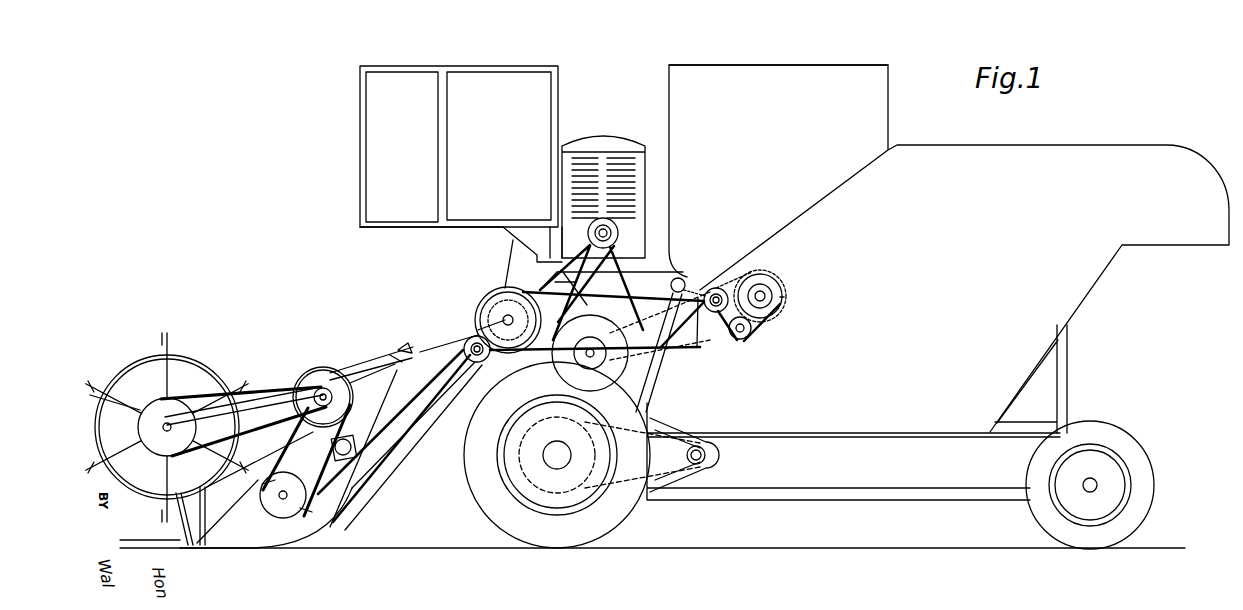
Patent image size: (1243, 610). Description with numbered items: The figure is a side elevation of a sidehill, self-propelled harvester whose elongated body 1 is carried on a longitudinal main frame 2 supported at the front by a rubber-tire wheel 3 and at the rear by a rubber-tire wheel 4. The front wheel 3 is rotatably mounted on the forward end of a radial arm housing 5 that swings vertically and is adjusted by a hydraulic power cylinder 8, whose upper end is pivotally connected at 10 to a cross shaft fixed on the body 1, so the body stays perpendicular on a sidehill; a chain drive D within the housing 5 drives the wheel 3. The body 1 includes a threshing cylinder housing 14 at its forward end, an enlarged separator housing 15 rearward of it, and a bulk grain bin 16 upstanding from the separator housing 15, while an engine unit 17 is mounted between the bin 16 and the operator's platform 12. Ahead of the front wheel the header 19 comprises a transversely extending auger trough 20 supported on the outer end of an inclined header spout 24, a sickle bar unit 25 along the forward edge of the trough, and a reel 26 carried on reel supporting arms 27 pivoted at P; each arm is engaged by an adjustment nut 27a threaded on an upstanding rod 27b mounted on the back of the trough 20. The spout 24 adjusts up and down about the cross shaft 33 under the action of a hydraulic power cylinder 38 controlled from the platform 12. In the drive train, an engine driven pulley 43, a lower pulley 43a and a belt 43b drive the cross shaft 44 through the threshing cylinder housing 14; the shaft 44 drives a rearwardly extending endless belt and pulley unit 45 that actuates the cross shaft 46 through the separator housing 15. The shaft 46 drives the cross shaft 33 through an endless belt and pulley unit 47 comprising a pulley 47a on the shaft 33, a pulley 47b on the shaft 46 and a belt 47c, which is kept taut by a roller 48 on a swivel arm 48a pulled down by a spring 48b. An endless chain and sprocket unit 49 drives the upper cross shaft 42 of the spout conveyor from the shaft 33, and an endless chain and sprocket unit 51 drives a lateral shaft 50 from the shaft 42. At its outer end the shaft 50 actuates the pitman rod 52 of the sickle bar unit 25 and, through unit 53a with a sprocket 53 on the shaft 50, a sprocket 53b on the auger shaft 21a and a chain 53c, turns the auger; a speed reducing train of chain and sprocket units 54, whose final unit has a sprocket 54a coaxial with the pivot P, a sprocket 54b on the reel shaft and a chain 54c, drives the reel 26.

The body 1 is at (1006, 140).
The main frame 2 is at (988, 479).
The front wheel 3 is at (538, 532).
The rear wheel 4 is at (1093, 428).
The radial arm housing 5 is at (700, 470).
The hydraulic power cylinder 8 is at (648, 380).
The pivotal connection 10 is at (684, 278).
The operator's platform 12 is at (396, 215).
The threshing cylinder housing 14 is at (575, 300).
The separator housing 15 is at (1050, 285).
The bulk grain bin 16 is at (862, 113).
The engine unit 17 is at (603, 132).
The header 19 is at (225, 375).
The auger trough 20 is at (250, 552).
The auger shaft 21a is at (286, 500).
The header spout 24 is at (362, 378).
The sickle bar unit 25 is at (176, 546).
The reel 26 is at (196, 358).
The reel supporting arm 27 is at (252, 388).
The adjustment nut 27a is at (393, 350).
The upstanding rod 27b is at (372, 376).
The cross shaft 33 is at (505, 318).
The hydraulic power cylinder 38 is at (428, 397).
The upper cross shaft 42 is at (470, 357).
The engine driven pulley 43 is at (618, 228).
The lower pulley 43a is at (555, 355).
The belt 43b is at (625, 252).
The cross shaft 44 is at (588, 360).
The endless belt and pulley unit 45 is at (722, 288).
The cross shaft 46 is at (762, 296).
The endless belt and pulley unit 47 is at (644, 300).
The pulley 47a is at (492, 300).
The pulley 47b is at (784, 300).
The belt 47c is at (540, 290).
The roller 48 is at (722, 315).
The swivel arm 48a is at (702, 290).
The spring 48b is at (690, 330).
The endless chain and sprocket unit 49 is at (470, 326).
The lateral shaft 50 is at (392, 450).
The endless chain and sprocket unit 51 is at (393, 403).
The pitman rod 52 is at (230, 485).
The sprocket 53 is at (305, 500).
The endless chain and sprocket unit 53a is at (310, 460).
The sprocket 53b is at (296, 500).
The chain 53c is at (352, 500).
The speed reducing train of endless chain and sprocket units 54 is at (322, 368).
The sprocket 54a is at (300, 420).
The sprocket 54b is at (160, 445).
The chain 54c is at (147, 393).
The pivot P is at (324, 390).
The chain drive D is at (690, 432).